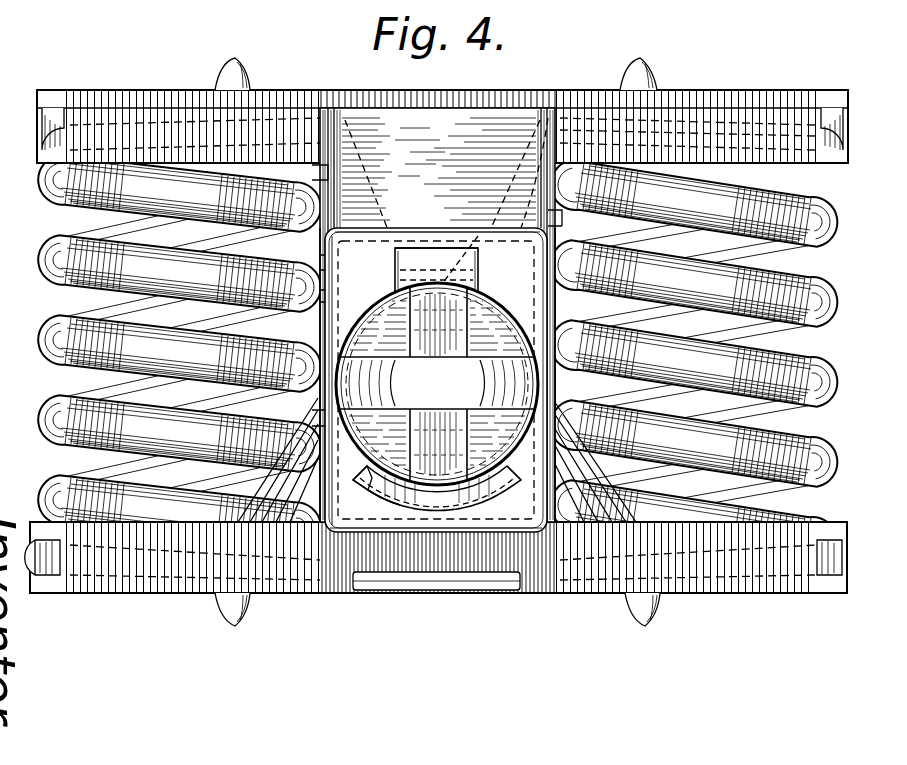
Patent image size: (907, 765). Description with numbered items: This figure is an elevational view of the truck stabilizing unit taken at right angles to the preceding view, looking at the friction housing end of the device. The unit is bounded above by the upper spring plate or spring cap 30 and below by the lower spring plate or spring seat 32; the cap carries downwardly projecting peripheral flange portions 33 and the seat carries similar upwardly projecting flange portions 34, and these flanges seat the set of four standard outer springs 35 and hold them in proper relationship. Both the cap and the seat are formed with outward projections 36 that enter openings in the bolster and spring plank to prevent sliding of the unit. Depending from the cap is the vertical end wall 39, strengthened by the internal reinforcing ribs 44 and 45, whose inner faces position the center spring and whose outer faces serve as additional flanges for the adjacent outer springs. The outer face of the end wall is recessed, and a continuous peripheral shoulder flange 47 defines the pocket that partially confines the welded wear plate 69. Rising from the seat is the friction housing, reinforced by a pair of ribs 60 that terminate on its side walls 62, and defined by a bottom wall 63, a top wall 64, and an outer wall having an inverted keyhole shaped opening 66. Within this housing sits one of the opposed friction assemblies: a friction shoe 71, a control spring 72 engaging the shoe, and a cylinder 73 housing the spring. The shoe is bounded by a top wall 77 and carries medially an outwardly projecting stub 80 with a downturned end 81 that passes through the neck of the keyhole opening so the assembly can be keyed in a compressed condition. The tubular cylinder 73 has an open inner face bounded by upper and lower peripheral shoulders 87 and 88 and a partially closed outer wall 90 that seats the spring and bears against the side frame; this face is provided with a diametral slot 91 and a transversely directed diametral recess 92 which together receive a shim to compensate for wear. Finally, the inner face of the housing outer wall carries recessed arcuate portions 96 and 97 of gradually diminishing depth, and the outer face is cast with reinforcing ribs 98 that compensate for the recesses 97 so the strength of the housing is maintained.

The upper spring plate or spring cap 30 is at (782, 90).
The lower spring plate or spring seat 32 is at (700, 580).
The downwardly projecting peripheral flange portions 33 is at (92, 140).
The upwardly projecting peripheral flange portions 34 is at (96, 570).
The springs 35 is at (62, 202).
The outward projections 36 is at (224, 78).
The end wall 39 is at (322, 262).
The rib 44 is at (345, 135).
The rib 45 is at (600, 135).
The peripheral shoulder flange 47 is at (318, 172).
The ribs 60 is at (272, 444).
The side walls 62 is at (300, 372).
The bottom wall 63 is at (428, 534).
The top wall 64 is at (418, 232).
The inverted keyhole shaped opening 66 is at (375, 322).
The wear plate 69 is at (475, 128).
The friction shoe 71 is at (320, 296).
The control spring 72 is at (540, 381).
The cylinder 73 is at (335, 340).
The top wall 77 is at (378, 283).
The outwardly projecting stub 80 is at (440, 250).
The downturned end 81 is at (412, 262).
The upper peripheral shoulder 87 is at (470, 238).
The lower peripheral shoulder 88 is at (500, 498).
The outer wall 90 is at (498, 322).
The diametral slot 91 is at (430, 394).
The transversely directed diametral recess 92 is at (492, 296).
The recessed arcuate portion 96 is at (505, 245).
The recessed arcuate portion 97 is at (362, 472).
The reinforcing ribs 98 is at (392, 505).